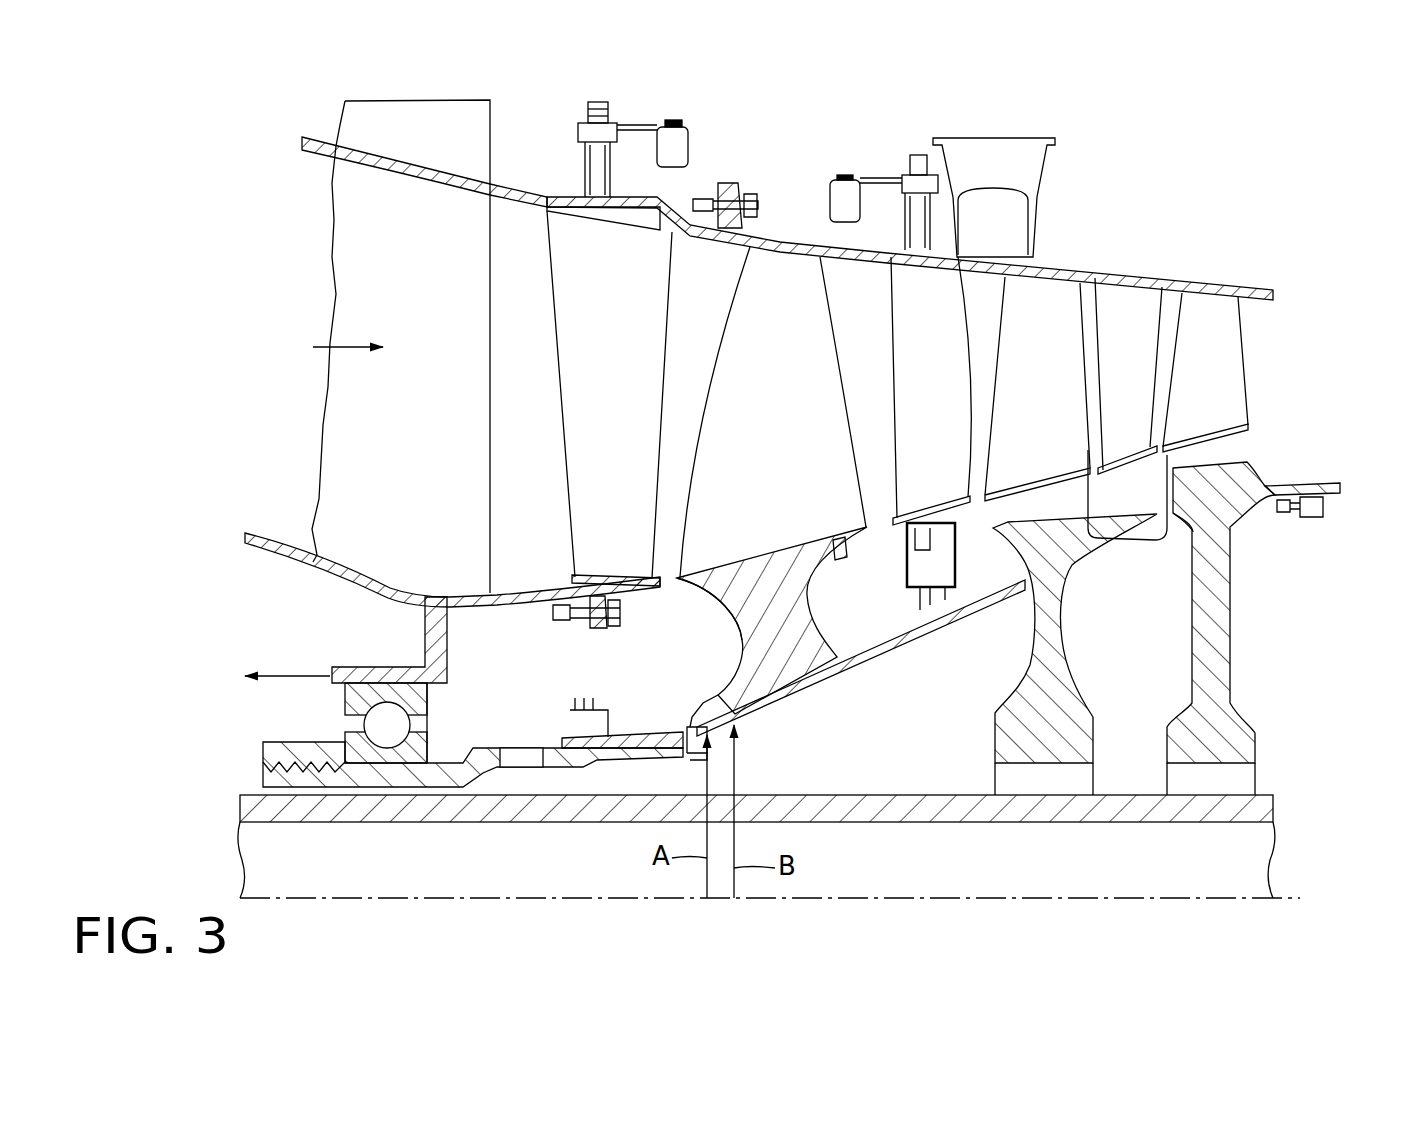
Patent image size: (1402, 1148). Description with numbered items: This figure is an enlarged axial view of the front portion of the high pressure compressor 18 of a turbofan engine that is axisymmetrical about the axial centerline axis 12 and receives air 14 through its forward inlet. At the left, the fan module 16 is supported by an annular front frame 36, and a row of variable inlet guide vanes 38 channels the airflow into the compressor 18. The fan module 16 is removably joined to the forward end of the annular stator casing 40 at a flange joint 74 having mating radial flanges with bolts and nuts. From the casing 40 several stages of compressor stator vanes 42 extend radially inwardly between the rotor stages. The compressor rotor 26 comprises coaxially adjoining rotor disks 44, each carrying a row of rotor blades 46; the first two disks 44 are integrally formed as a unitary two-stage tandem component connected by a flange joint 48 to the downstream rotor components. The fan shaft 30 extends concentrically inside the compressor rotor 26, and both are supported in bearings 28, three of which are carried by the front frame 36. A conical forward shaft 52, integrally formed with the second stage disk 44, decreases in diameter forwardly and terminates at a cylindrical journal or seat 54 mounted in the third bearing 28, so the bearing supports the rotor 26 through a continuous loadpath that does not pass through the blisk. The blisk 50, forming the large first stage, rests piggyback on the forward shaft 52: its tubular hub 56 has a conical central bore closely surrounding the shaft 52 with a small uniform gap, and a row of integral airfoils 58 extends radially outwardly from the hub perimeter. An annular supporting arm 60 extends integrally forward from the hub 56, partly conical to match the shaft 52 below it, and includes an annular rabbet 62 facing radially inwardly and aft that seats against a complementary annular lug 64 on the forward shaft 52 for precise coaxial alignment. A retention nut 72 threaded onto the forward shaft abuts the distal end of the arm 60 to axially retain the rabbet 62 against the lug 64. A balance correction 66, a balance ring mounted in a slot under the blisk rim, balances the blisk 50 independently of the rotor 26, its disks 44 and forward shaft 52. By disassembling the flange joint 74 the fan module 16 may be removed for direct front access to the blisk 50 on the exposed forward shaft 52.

The axial centerline axis 12 is at (1092, 898).
The air 14 is at (345, 352).
The fan module 16 is at (443, 147).
The high pressure compressor 18 is at (1131, 262).
The compressor rotor 26 is at (1153, 525).
The bearings 28 is at (366, 722).
The fan shaft 30 is at (767, 793).
The front frame 36 is at (436, 269).
The variable inlet guide vanes 38 is at (633, 371).
The stator casing 40 is at (1235, 282).
The compressor stator vanes 42 is at (944, 367).
The rotor disks 44 is at (1033, 641).
The compressor rotor blades 46 is at (1059, 401).
The flange joint 48 is at (1300, 450).
The blisk 50 is at (689, 590).
The forward shaft 52 is at (853, 677).
The journal or seat 54 is at (452, 755).
The hub 56 is at (790, 617).
The airfoils 58 is at (803, 429).
The supporting arm 60 is at (713, 693).
The rabbet 62 is at (692, 755).
The lug 64 is at (707, 705).
The balance correction 66 is at (843, 555).
The retention nut 72 is at (600, 740).
The flange joint 74 is at (742, 185).